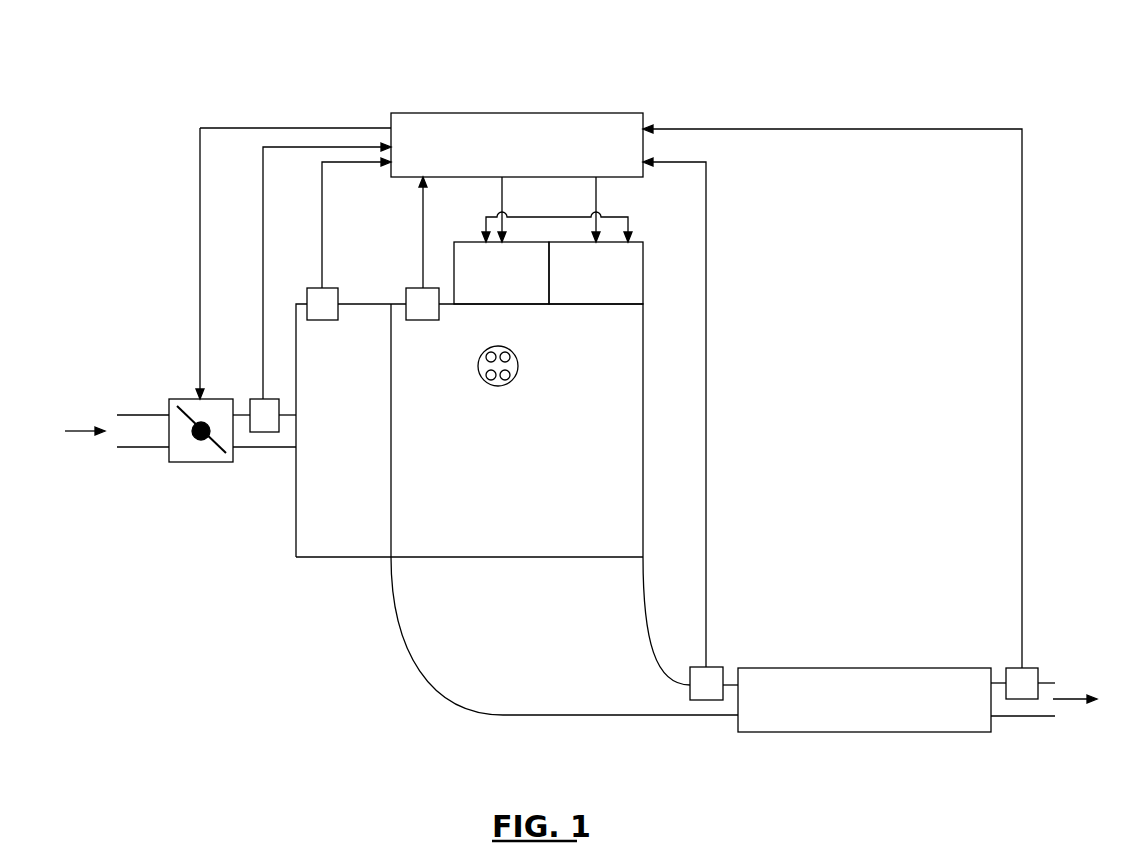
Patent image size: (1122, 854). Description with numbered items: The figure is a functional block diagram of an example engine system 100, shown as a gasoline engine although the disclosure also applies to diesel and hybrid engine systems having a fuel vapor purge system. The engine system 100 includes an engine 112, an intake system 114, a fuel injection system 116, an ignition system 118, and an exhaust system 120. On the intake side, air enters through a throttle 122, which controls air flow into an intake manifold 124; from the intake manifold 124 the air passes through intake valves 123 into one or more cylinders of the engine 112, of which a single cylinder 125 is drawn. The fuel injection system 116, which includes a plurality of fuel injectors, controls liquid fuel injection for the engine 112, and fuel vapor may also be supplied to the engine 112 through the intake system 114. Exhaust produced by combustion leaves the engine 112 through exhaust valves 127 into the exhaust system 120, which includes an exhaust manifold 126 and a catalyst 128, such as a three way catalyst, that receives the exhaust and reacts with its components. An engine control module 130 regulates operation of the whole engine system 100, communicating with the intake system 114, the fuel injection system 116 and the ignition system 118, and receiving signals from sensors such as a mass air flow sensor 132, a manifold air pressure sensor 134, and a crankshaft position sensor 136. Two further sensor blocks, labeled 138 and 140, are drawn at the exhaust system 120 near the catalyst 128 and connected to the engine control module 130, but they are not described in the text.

The engine system 100 is at (108, 49).
The engine 112 is at (643, 428).
The intake system 114 is at (125, 183).
The fuel injection system 116 is at (484, 240).
The ignition system 118 is at (630, 240).
The exhaust system 120 is at (616, 673).
The throttle 122 is at (180, 399).
The intake valves 123 is at (497, 345).
The intake manifold 124 is at (296, 506).
The cylinder 125 is at (519, 366).
The exhaust manifold 126 is at (391, 572).
The exhaust valves 127 is at (497, 388).
The catalyst 128 is at (864, 668).
The engine control module 130 is at (513, 113).
The mass air flow sensor 132 is at (253, 399).
The manifold air pressure sensor 134 is at (310, 288).
The crankshaft position sensor 136 is at (410, 288).
The upstream oxygen sensor 138 is at (712, 667).
The downstream oxygen sensor 140 is at (1009, 668).